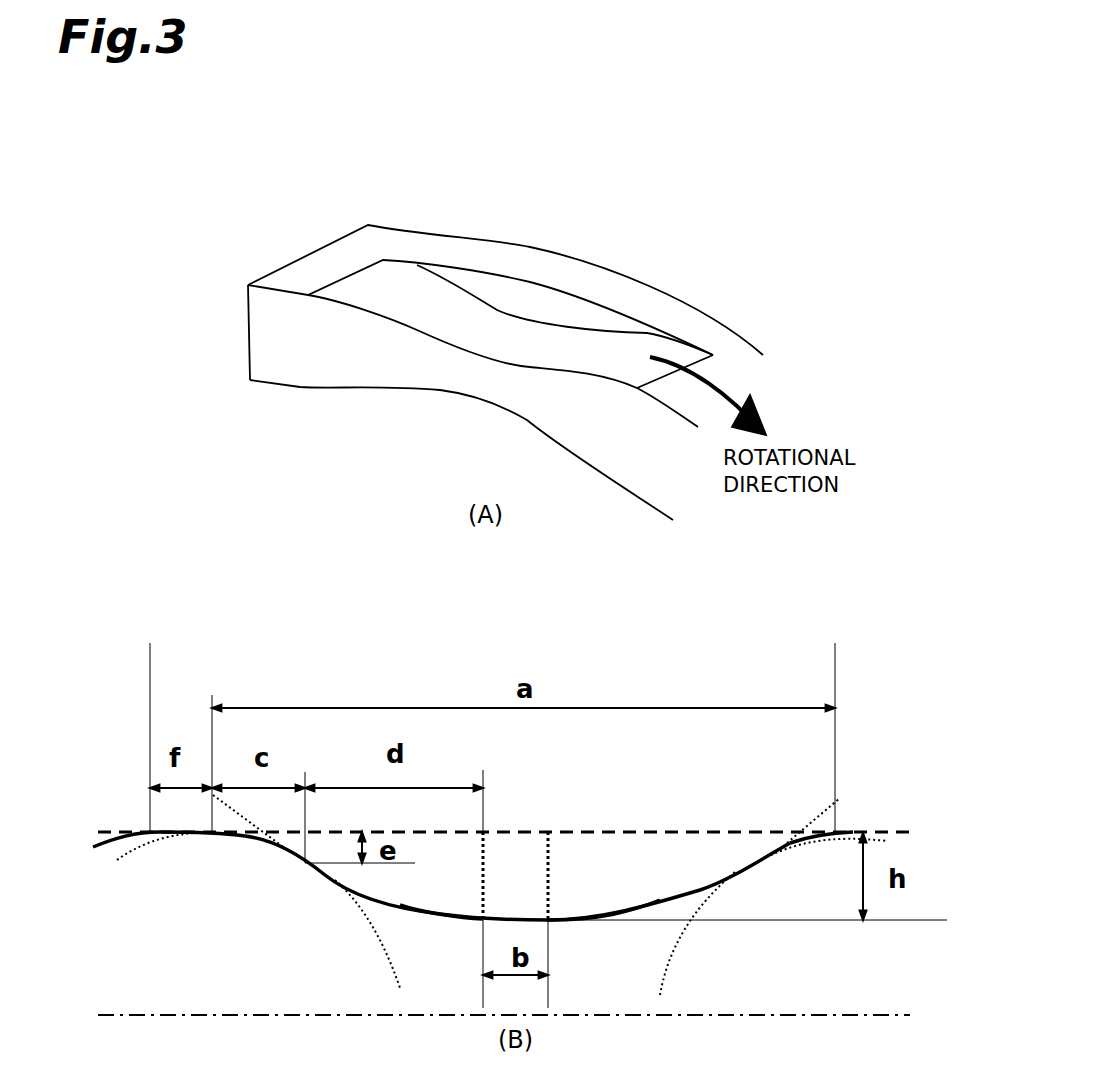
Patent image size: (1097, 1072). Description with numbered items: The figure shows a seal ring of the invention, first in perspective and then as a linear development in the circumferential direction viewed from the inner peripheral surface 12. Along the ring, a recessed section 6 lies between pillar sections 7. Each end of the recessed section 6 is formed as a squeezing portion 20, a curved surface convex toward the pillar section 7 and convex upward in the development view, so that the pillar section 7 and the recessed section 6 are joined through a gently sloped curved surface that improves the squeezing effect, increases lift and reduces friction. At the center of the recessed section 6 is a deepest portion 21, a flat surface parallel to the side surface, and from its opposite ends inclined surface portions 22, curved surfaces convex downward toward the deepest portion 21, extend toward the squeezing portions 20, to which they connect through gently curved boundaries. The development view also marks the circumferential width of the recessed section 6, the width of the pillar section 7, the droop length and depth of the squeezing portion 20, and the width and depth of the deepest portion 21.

In FIG. 3A, the recessed section 6 is at (497, 317).
In FIG. 3A, the pillar section 7 is at (315, 268).
In FIG. 3B, the pillar section 7 is at (183, 838).
In FIG. 3A, the inner peripheral surface 12 is at (360, 348).
In FIG. 3B, the squeezing portion 20 is at (278, 858).
In FIG. 3B, the deepest portion 21 is at (518, 915).
In FIG. 3B, the inclined surface portion 22 is at (648, 903).